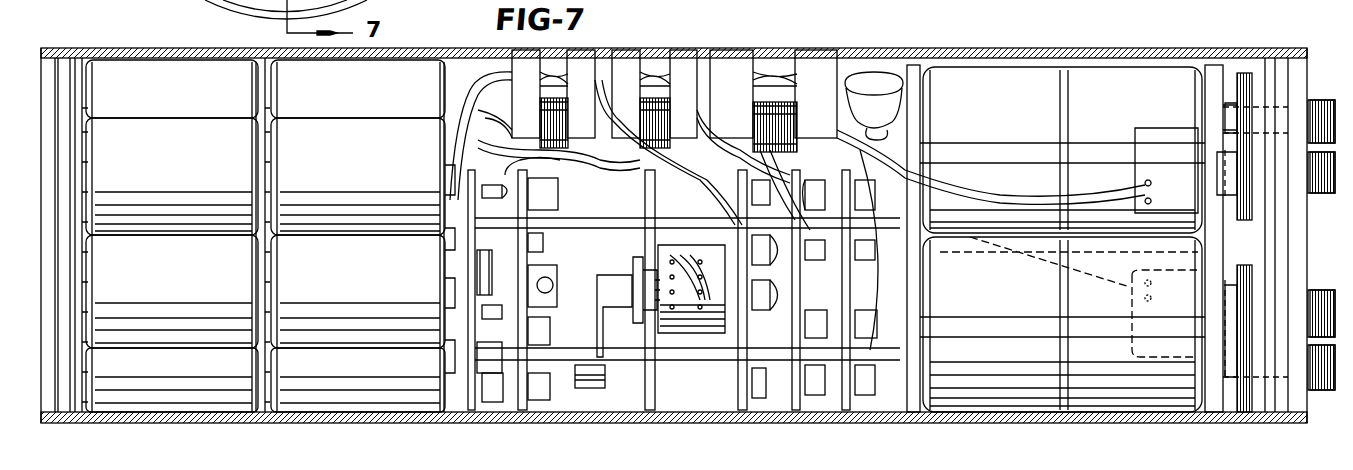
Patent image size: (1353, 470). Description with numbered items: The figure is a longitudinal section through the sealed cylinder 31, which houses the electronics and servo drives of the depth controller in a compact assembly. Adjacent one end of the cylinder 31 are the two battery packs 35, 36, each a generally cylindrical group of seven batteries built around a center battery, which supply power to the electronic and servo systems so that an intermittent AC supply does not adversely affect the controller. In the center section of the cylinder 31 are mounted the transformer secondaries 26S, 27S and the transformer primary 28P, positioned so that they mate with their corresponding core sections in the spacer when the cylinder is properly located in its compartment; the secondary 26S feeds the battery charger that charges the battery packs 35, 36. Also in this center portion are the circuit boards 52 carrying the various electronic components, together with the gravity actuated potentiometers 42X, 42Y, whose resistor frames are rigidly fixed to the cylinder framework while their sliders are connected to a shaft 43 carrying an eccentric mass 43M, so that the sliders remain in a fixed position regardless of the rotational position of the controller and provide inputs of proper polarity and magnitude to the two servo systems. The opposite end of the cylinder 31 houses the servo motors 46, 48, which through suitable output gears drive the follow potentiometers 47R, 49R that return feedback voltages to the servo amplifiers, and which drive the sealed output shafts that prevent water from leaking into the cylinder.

The sealed cylinder 31 is at (440, 50).
The primary winding and core section of transformer 28 28P is at (578, 52).
The secondary winding and core section of transformer 27 27S is at (687, 52).
The secondary winding and core section of transformer 26 26S is at (817, 58).
The servo motor 46 is at (1007, 75).
The follow potentiometer 47R is at (1157, 132).
The gravity actuated potentiometer 42X is at (628, 220).
The gravity actuated potentiometer 42Y is at (722, 233).
The shaft 43 is at (612, 283).
The eccentric mass 43M is at (595, 390).
The circuit boards 52 is at (520, 441).
The battery pack 35 is at (192, 400).
The battery pack 36 is at (340, 400).
The servo motor 48 is at (1130, 403).
The follow potentiometer 49R is at (1132, 305).